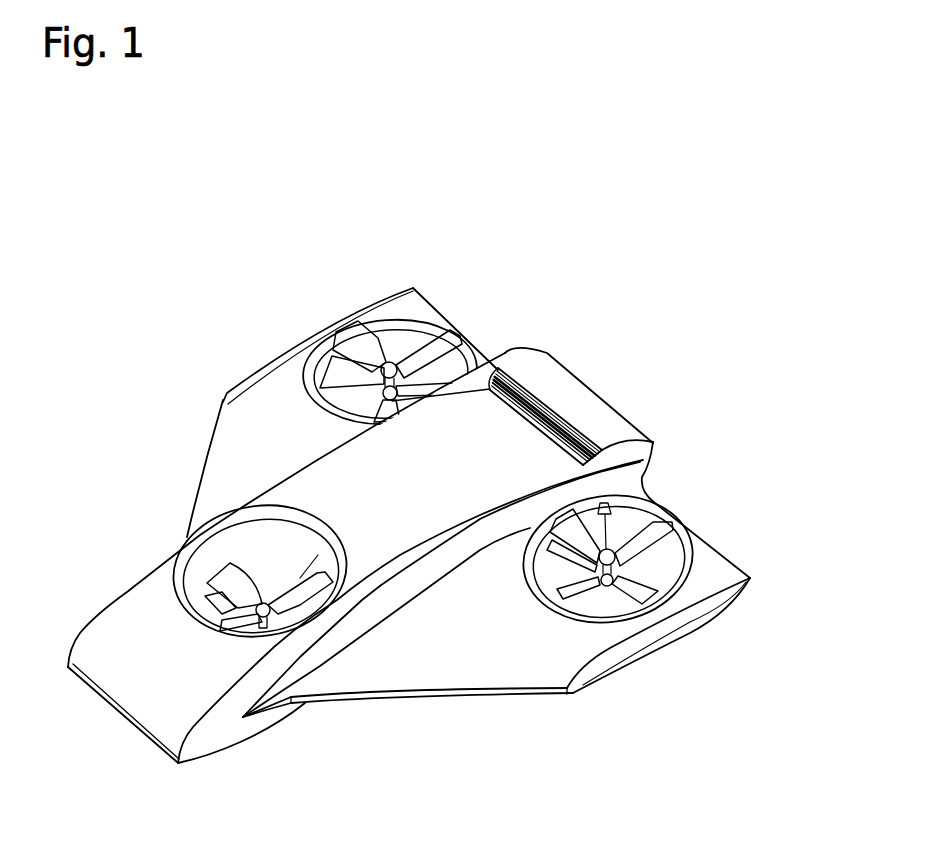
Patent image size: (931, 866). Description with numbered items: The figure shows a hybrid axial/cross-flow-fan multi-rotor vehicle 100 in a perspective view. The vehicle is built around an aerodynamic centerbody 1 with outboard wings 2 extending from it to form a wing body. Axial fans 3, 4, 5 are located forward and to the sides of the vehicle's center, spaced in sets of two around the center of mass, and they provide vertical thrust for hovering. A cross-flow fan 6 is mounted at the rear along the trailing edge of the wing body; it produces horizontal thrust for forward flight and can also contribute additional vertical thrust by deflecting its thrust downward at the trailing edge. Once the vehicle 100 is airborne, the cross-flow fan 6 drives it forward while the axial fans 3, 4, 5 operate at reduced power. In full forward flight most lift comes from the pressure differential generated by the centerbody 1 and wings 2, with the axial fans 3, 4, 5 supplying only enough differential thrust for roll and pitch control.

The hybrid axial/CFF multi-rotor vehicle 100 is at (695, 243).
The aerodynamic centerbody 1 is at (147, 688).
The outboard wings 2 is at (255, 433).
The axial fan 3 is at (232, 585).
The axial fan 4 is at (357, 343).
The axial fan 5 is at (643, 588).
The cross-flow fan 6 is at (558, 412).